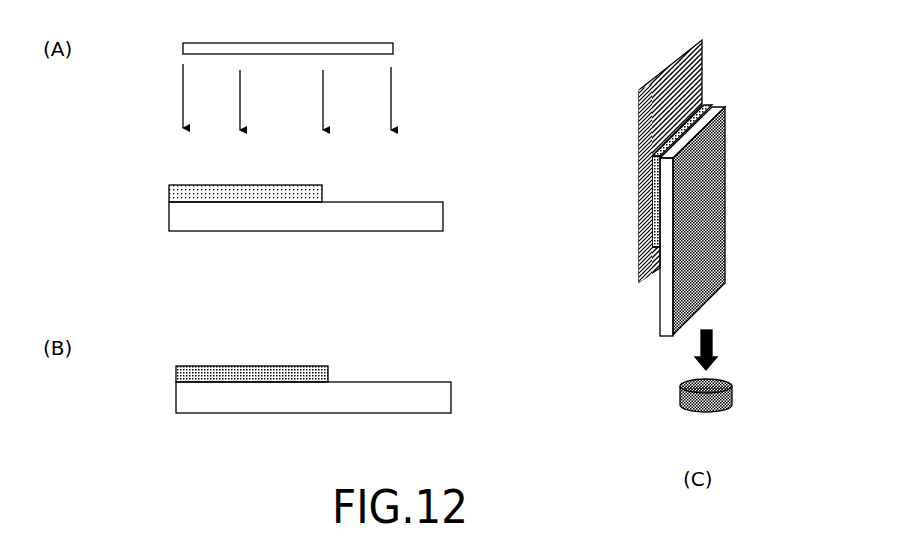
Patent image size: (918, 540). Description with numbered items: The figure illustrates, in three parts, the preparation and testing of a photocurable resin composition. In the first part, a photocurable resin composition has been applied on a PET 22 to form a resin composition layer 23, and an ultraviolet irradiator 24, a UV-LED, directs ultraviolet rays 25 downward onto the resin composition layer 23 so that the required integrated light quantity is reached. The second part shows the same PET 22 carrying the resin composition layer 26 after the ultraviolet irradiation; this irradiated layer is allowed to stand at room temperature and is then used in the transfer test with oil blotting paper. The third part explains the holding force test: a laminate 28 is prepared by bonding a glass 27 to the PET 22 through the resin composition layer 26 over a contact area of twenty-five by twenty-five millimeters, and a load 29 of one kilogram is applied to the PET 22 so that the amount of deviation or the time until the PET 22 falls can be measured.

The PET 22 is at (169, 215).
The resin composition layer 23 is at (169, 192).
The ultraviolet irradiator 24 is at (395, 46).
The ultraviolet rays 25 is at (393, 101).
The resin composition layer 26 is at (176, 375).
The glass 27 is at (702, 52).
The laminate 28 is at (763, 28).
The load 29 is at (733, 392).